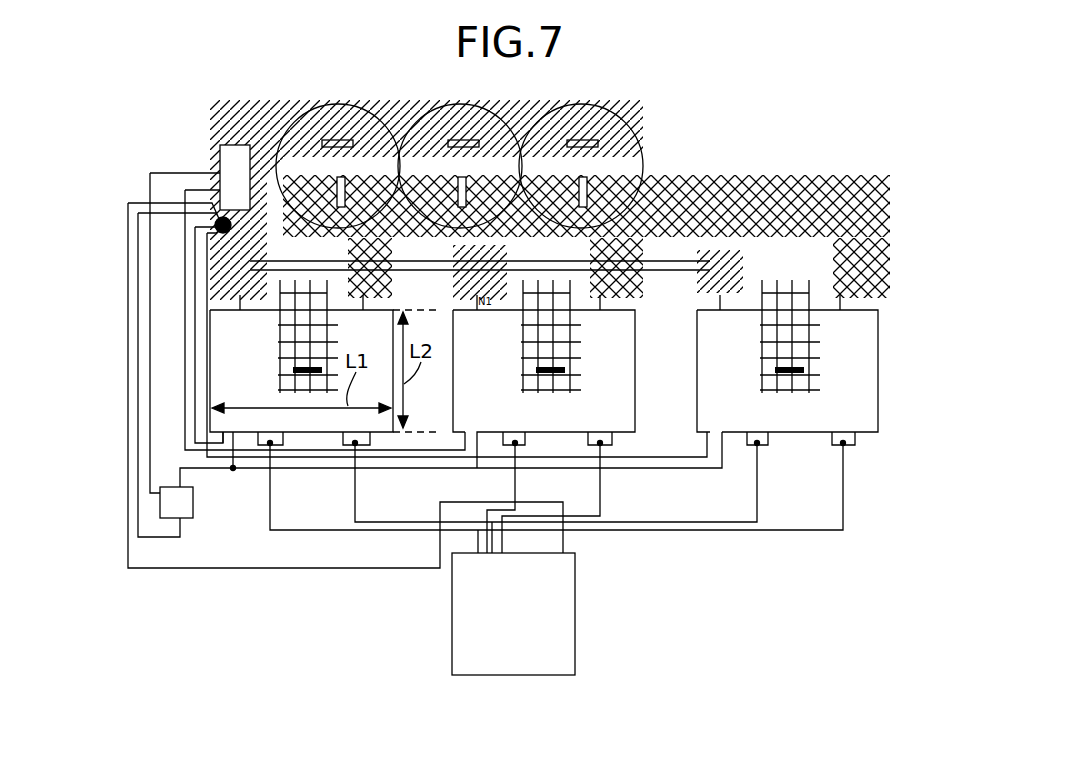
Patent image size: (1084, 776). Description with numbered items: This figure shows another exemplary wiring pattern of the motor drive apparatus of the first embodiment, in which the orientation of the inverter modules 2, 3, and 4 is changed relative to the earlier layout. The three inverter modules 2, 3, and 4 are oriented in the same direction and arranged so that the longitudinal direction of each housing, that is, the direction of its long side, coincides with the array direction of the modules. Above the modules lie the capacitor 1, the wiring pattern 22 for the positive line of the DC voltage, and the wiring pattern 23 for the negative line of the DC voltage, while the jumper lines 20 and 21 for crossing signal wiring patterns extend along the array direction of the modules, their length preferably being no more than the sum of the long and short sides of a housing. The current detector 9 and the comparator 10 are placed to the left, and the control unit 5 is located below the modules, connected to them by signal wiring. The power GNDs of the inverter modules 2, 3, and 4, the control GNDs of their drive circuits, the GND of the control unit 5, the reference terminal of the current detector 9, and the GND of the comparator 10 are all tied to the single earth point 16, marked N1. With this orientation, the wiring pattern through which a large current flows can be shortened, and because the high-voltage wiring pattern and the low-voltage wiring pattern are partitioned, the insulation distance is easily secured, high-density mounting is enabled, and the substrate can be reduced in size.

The capacitor 1 is at (333, 100).
The inverter module 2 is at (230, 382).
The inverter module 3 is at (616, 377).
The inverter module 4 is at (856, 377).
The control unit 5 is at (452, 634).
The current detector 9 is at (220, 158).
The comparator 10 is at (160, 512).
The earth point 16 is at (215, 226).
The jumper line 20 is at (250, 264).
The jumper line 21 is at (678, 261).
The wiring pattern 22 is at (875, 208).
The wiring pattern 23 is at (636, 112).